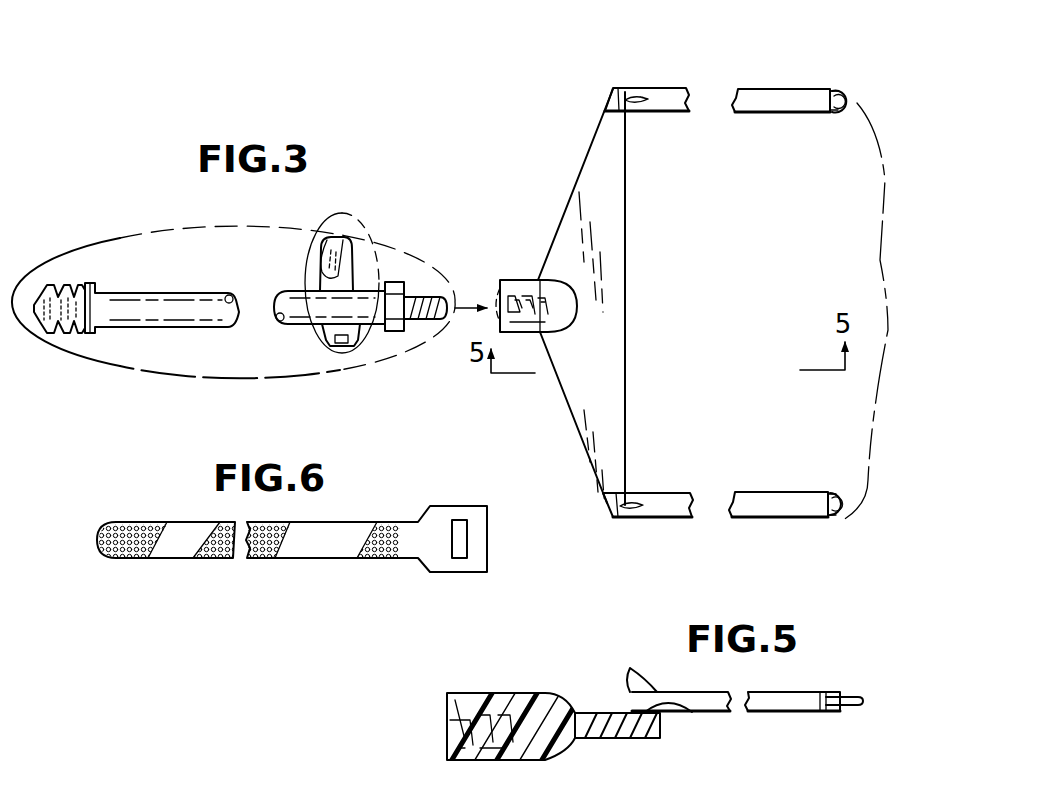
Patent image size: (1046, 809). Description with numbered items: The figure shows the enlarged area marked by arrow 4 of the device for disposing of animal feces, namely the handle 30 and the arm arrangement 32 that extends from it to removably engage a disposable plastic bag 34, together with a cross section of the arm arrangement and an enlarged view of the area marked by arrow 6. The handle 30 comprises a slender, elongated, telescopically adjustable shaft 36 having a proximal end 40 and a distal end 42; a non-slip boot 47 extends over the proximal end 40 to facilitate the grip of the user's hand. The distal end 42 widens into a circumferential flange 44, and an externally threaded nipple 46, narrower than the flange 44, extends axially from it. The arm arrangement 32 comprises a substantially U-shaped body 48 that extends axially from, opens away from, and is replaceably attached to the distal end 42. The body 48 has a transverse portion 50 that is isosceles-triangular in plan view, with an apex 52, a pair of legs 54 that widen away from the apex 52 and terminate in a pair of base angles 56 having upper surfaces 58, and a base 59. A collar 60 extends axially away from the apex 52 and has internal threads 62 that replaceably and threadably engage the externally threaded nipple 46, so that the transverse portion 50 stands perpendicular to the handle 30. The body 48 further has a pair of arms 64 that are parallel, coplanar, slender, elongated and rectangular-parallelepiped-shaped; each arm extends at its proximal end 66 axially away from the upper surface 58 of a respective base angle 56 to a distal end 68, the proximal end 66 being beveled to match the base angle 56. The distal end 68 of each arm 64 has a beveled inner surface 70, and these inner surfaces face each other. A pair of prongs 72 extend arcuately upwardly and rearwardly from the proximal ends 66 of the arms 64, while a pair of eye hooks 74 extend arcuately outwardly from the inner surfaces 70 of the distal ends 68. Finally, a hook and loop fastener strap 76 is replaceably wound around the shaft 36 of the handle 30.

In FIG. 3, the insertion tool assembly 4 is at (79, 358).
In FIG. 3, the arrow 6 is at (320, 341).
In FIG. 3, the handle 30 is at (180, 292).
In FIG. 3, the arm arrangement 32 is at (573, 187).
In FIG. 5, the arm arrangement 32 is at (578, 712).
In FIG. 3, the disposable plastic bag 34 is at (747, 245).
In FIG. 3, the shaft 36 is at (218, 292).
In FIG. 3, the proximal end 40 is at (63, 285).
In FIG. 3, the distal end 42 is at (398, 332).
In FIG. 3, the circumferential flange 44 is at (397, 287).
In FIG. 3, the externally threaded nipple 46 is at (420, 320).
In FIG. 3, the non-slip boot 47 is at (88, 290).
In FIG. 3, the body 48 is at (633, 87).
In FIG. 5, the body 48 is at (617, 712).
In FIG. 3, the transverse portion 50 is at (615, 310).
In FIG. 5, the transverse portion 50 is at (515, 693).
In FIG. 3, the apex 52 is at (537, 280).
In FIG. 5, the apex 52 is at (583, 738).
In FIG. 3, the pair of legs 54 is at (590, 140).
In FIG. 3, the pair of base angles 56 is at (612, 98).
In FIG. 5, the pair of base angles 56 is at (660, 740).
In FIG. 3, the upper surfaces 58 is at (612, 113).
In FIG. 5, the upper surfaces 58 is at (688, 715).
In FIG. 3, the base 59 is at (628, 255).
In FIG. 5, the base 59 is at (660, 737).
In FIG. 3, the collar 60 is at (522, 283).
In FIG. 5, the collar 60 is at (470, 693).
In FIG. 3, the internal threads 62 is at (500, 305).
In FIG. 5, the internal threads 62 is at (447, 718).
In FIG. 3, the pair of arms 64 is at (738, 92).
In FIG. 5, the pair of arms 64 is at (793, 713).
In FIG. 3, the proximal end 66 is at (625, 100).
In FIG. 5, the proximal end 66 is at (646, 665).
In FIG. 3, the distal end 68 is at (838, 95).
In FIG. 5, the distal end 68 is at (838, 714).
In FIG. 3, the inner surface 70 is at (830, 112).
In FIG. 5, the inner surface 70 is at (828, 692).
In FIG. 3, the pair of prongs 72 is at (642, 100).
In FIG. 5, the pair of prongs 72 is at (655, 690).
In FIG. 3, the pair of eye hooks 74 is at (848, 112).
In FIG. 5, the pair of eye hooks 74 is at (850, 695).
In FIG. 3, the strap 76 is at (338, 236).
In FIG. 6, the strap 76 is at (175, 522).